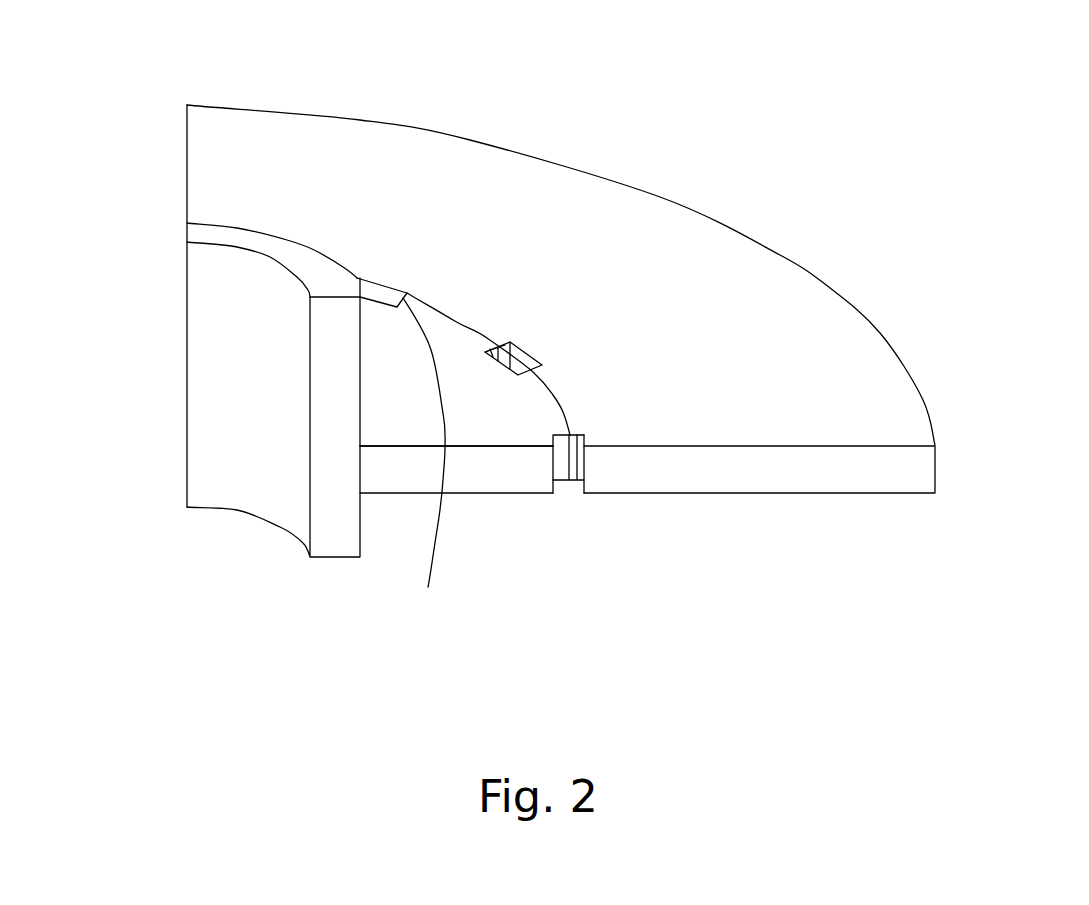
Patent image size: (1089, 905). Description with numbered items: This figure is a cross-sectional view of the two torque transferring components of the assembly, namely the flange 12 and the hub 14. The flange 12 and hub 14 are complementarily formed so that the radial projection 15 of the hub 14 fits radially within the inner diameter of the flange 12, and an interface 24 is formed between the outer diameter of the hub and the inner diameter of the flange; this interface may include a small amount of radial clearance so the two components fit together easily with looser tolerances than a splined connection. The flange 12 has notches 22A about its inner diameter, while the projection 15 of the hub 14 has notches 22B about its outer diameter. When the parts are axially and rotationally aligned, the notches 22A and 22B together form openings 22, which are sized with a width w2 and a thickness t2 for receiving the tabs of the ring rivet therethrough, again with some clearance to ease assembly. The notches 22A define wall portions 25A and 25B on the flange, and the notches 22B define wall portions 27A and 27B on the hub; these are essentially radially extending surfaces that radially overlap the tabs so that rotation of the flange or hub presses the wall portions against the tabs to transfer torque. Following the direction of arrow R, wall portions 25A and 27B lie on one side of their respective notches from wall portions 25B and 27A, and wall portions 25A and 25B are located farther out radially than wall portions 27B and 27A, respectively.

The flange 12 is at (762, 472).
The hub 14 is at (340, 542).
The radial projection 15 is at (387, 478).
The openings 22 is at (371, 287).
The notches 22A is at (584, 437).
The notches 22B is at (553, 453).
The interface 24 is at (448, 302).
The wall portion 25A is at (577, 468).
The wall portion 25B is at (410, 292).
The wall portion 27A is at (430, 463).
The wall portion 27B is at (560, 467).
The arrow R is at (1041, 400).
The width w2 is at (628, 400).
The thickness t2 is at (497, 416).